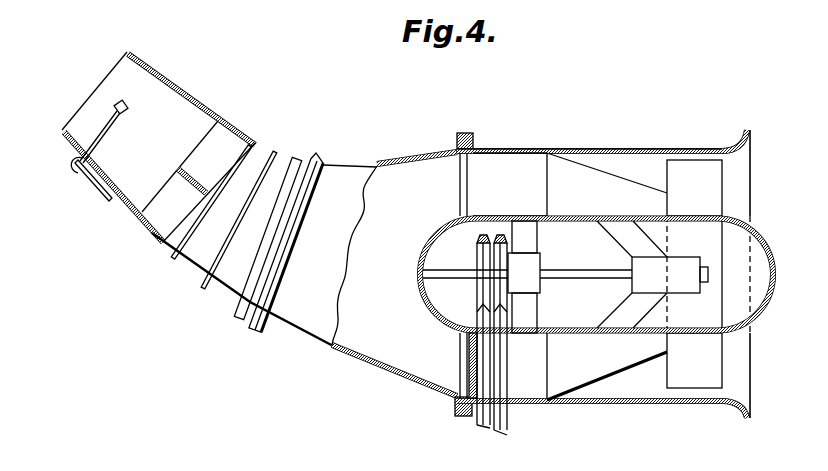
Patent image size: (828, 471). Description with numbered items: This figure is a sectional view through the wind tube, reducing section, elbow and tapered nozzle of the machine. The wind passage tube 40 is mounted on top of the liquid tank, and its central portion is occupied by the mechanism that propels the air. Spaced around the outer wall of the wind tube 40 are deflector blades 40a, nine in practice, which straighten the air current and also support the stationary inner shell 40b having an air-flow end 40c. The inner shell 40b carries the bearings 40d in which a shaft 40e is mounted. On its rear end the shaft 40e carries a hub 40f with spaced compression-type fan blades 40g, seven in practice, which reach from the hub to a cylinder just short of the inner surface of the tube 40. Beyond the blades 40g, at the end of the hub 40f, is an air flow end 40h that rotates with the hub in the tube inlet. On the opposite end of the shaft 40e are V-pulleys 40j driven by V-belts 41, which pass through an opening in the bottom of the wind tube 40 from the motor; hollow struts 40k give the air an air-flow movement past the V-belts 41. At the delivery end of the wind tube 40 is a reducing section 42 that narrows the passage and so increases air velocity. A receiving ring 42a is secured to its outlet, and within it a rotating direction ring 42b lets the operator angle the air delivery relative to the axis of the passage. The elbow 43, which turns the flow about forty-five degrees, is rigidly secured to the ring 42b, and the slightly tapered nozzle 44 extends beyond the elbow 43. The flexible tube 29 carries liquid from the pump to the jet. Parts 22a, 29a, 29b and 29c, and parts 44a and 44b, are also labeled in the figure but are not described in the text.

The mounting ring 22a is at (250, 327).
The flexible tube 29 is at (100, 200).
The hook 29a is at (78, 168).
The rod 29b is at (100, 140).
The knob 29c is at (130, 110).
The wind passage tube 40 is at (550, 150).
The deflector blades 40a is at (598, 172).
The inner shell 40b is at (518, 212).
The air-flow end 40c is at (441, 243).
The bearings 40d is at (673, 263).
The shaft 40e is at (612, 283).
The hub 40f is at (710, 317).
The fan blades 40g is at (692, 160).
The air flow end 40h is at (760, 234).
The V-pulleys 40j is at (493, 266).
The hollow struts 40k is at (513, 363).
The V-belts 41 is at (495, 240).
The reducing section 42 is at (424, 158).
The receiving ring 42a is at (322, 162).
The rotating direction ring 42b is at (297, 160).
The elbow 43 is at (195, 267).
The tapered nozzle 44 is at (207, 101).
The partition 44a is at (228, 138).
The block 44b is at (188, 163).